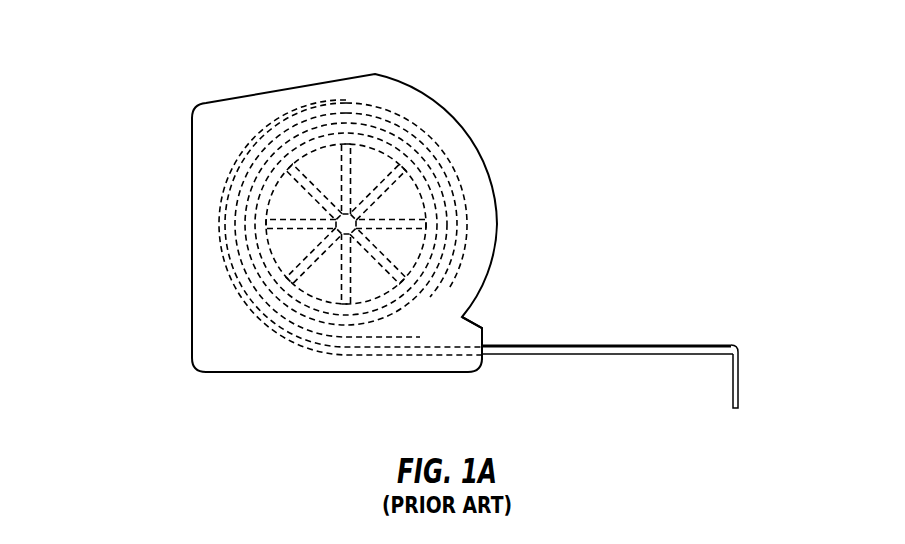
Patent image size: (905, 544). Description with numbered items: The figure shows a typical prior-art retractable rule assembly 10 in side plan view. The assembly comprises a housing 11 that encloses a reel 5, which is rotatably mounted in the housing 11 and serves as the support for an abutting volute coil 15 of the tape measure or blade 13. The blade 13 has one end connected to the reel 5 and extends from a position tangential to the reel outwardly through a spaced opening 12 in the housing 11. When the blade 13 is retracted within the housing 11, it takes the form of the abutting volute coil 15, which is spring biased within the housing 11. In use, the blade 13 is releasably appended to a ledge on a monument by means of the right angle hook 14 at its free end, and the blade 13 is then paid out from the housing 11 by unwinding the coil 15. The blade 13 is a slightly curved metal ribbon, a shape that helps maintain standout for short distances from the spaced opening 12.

The retractable rule assembly 10 is at (118, 78).
The housing 11 is at (303, 82).
The reel 5 is at (415, 198).
The abutting volute coil 15 is at (218, 234).
The spaced opening 12 is at (485, 355).
The blade 13 is at (688, 345).
The right angle hook 14 is at (740, 385).